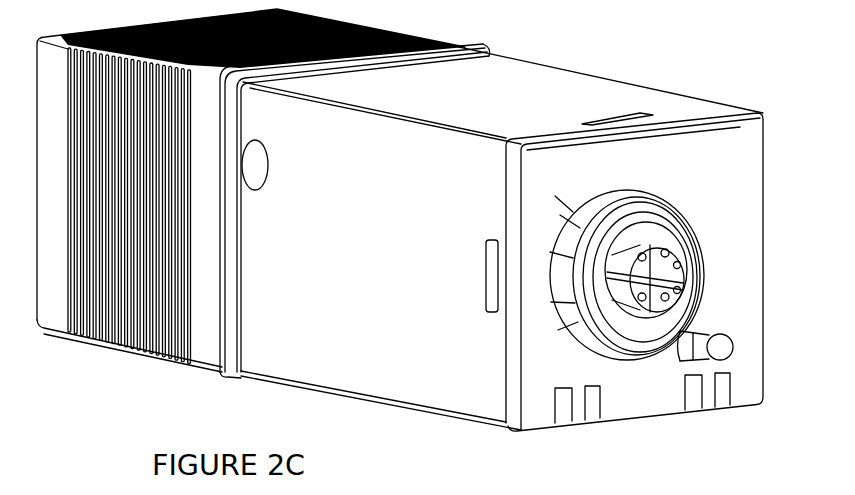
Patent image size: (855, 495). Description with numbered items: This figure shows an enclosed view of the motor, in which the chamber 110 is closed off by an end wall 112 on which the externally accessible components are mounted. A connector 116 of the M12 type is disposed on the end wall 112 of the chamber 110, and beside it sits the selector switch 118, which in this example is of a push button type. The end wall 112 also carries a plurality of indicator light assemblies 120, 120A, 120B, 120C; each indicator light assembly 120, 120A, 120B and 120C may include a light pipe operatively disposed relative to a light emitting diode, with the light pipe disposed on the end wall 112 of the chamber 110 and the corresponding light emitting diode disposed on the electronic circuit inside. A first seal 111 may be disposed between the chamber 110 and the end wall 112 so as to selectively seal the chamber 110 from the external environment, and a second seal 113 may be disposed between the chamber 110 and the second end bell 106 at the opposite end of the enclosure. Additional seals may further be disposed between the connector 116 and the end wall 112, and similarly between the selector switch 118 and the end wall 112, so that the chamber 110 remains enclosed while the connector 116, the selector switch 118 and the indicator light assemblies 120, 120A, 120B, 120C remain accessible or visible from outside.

The second end bell 106 is at (202, 342).
The chamber 110 is at (565, 98).
The first seal 111 is at (703, 112).
The end wall 112 is at (747, 270).
The second seal 113 is at (223, 373).
The connector 116 is at (553, 277).
The selector switch 118 is at (721, 346).
The indicator light assembly 120 is at (727, 401).
The indicator light assembly 120A is at (690, 401).
The indicator light assembly 120B is at (595, 414).
The indicator light assembly 120C is at (567, 414).